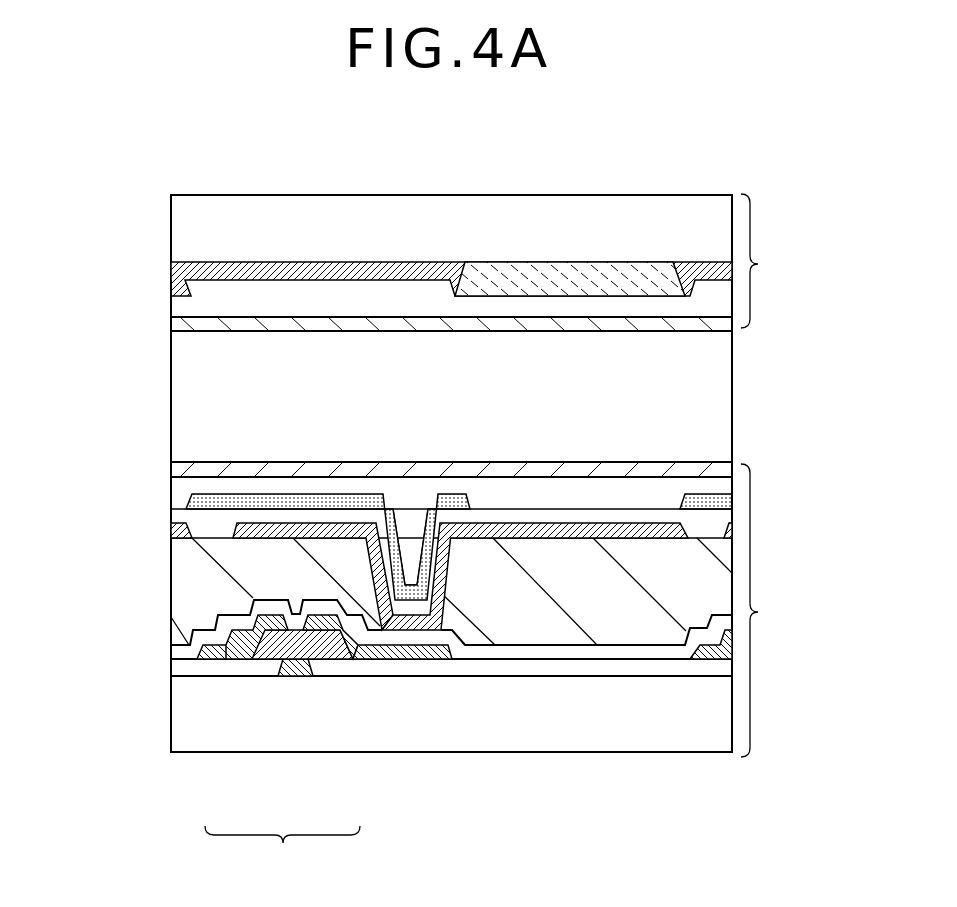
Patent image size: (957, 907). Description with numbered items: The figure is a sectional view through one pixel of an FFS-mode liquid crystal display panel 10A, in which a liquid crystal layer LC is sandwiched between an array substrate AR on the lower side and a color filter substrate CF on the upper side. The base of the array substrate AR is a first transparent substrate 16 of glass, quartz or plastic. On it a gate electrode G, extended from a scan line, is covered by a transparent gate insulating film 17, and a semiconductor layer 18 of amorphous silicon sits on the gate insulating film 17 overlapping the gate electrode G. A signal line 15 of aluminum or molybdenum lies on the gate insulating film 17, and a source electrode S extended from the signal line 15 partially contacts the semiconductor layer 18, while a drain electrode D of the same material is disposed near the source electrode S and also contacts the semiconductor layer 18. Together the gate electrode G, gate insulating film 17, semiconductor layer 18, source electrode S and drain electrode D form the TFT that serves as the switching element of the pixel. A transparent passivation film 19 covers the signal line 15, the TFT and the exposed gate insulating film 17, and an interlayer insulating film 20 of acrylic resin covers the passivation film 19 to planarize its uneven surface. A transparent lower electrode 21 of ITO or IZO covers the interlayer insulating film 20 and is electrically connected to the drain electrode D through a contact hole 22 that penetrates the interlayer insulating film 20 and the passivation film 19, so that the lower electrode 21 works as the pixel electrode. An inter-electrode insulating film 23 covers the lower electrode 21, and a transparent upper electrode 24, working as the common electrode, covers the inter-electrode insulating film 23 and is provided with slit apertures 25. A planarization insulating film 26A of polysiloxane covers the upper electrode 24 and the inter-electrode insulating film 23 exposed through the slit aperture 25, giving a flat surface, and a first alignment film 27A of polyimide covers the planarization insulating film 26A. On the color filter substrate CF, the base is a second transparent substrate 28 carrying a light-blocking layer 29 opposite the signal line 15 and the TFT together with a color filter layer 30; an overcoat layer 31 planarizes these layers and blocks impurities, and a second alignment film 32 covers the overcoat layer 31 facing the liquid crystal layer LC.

The liquid crystal display panel 10A is at (150, 149).
The second transparent substrate 28 is at (235, 225).
The light-blocking layer 29 is at (292, 272).
The color filter layer 30 is at (576, 275).
The overcoat layer 31 is at (352, 298).
The second alignment film 32 is at (413, 323).
The liquid crystal layer LC is at (706, 380).
The color filter substrate CF is at (769, 261).
The array substrate AR is at (770, 610).
The first transparent substrate 16 is at (441, 740).
The gate insulating film 17 is at (530, 668).
The gate electrode G is at (296, 664).
The semiconductor layer 18 is at (293, 637).
The signal line 15 is at (212, 653).
The source electrode S is at (250, 647).
The drain electrode D is at (330, 607).
The passivation film 19 is at (348, 640).
The interlayer insulating film 20 is at (512, 591).
The lower electrode 21 is at (625, 535).
The contact hole 22 is at (411, 612).
The inter-electrode insulating film 23 is at (352, 525).
The upper electrode 24 is at (235, 497).
The slit aperture 25 is at (507, 494).
The planarization insulating film 26A is at (595, 493).
The first alignment film 27A is at (667, 468).
The element TFT is at (282, 850).